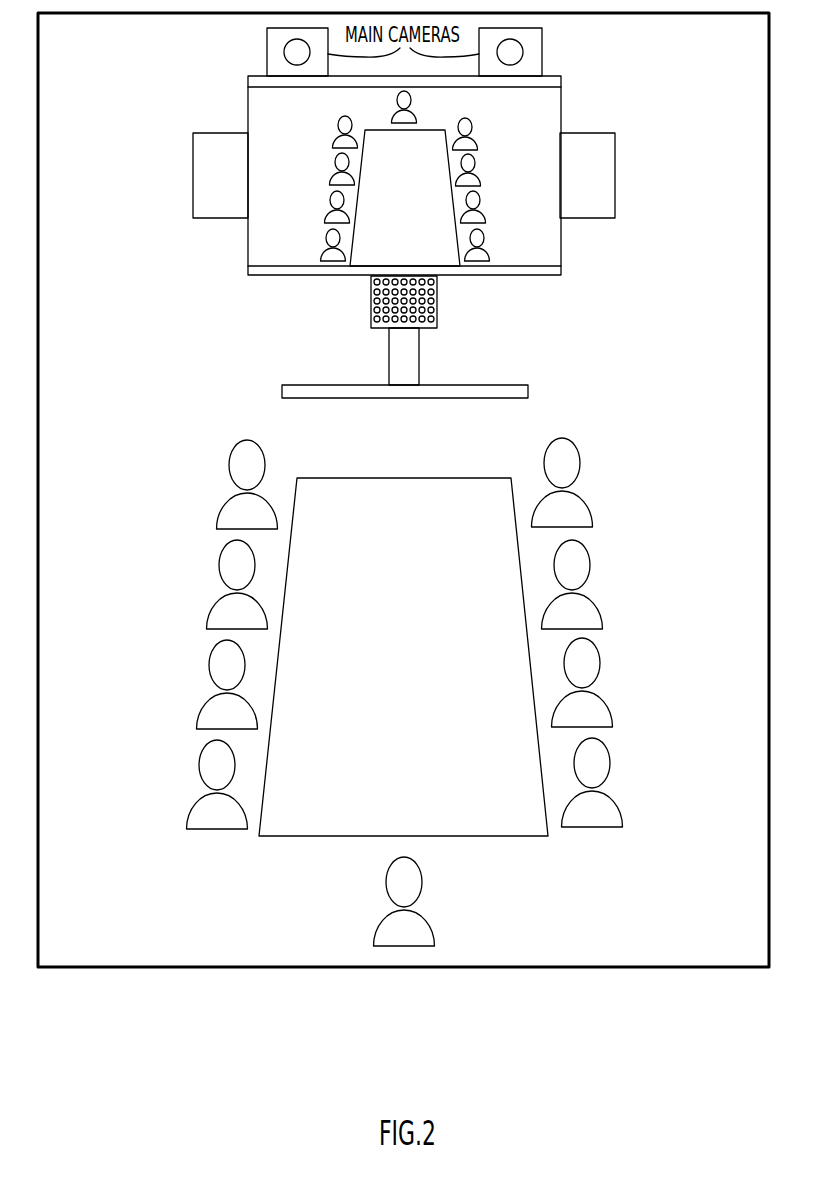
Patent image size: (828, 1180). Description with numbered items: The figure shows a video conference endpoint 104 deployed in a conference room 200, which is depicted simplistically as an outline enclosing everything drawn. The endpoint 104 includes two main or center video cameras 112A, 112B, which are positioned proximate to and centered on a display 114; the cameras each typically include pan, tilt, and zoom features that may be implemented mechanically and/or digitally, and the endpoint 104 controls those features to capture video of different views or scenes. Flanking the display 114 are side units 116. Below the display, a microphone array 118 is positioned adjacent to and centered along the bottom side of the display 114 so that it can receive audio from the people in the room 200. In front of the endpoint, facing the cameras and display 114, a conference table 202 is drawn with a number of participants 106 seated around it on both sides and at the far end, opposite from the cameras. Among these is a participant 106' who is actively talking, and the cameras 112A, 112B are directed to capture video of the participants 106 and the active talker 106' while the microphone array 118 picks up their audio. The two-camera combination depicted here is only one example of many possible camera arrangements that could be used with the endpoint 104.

The conference room 200 is at (690, 62).
The video conference endpoint 104 is at (195, 85).
The main video camera 112A is at (267, 54).
The main video camera 112B is at (542, 54).
The display 114 is at (561, 125).
The loudspeakers 116 is at (193, 185).
The microphone array (MA) 118 is at (437, 300).
The conference table 202 is at (413, 674).
The participants 106 is at (418, 692).
The actively talking participant 106' is at (590, 583).